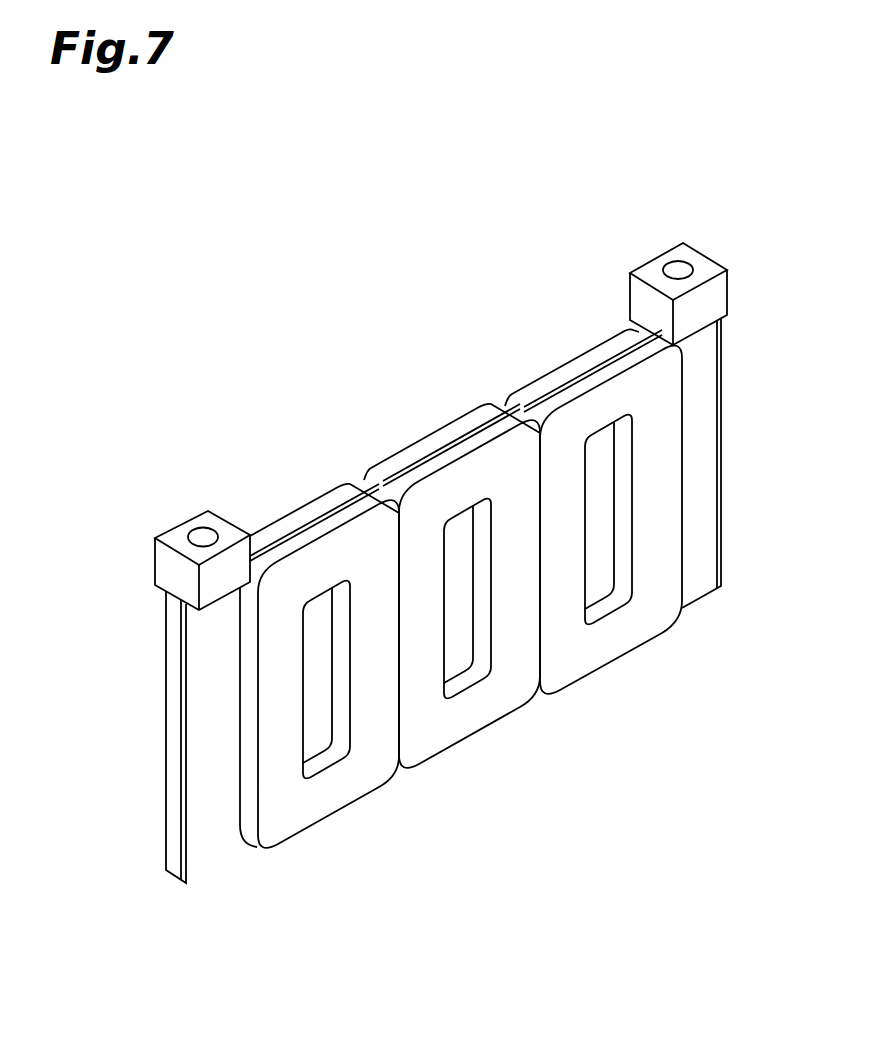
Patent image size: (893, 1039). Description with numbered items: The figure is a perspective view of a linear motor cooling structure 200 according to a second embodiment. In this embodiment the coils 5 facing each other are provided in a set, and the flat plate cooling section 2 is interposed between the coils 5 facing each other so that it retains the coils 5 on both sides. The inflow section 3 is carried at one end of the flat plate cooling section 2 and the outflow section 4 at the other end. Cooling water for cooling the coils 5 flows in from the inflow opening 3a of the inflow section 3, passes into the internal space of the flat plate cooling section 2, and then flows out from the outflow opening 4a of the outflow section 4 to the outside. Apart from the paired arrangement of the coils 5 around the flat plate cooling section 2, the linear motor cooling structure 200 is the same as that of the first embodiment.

The linear motor cooling structure 200 is at (494, 320).
The flat plate cooling section 2 is at (210, 722).
The inflow section 3 is at (192, 519).
The inflow opening 3a is at (203, 535).
The outflow section 4 is at (683, 260).
The outflow opening 4a is at (678, 268).
The coil 5 is at (297, 517).